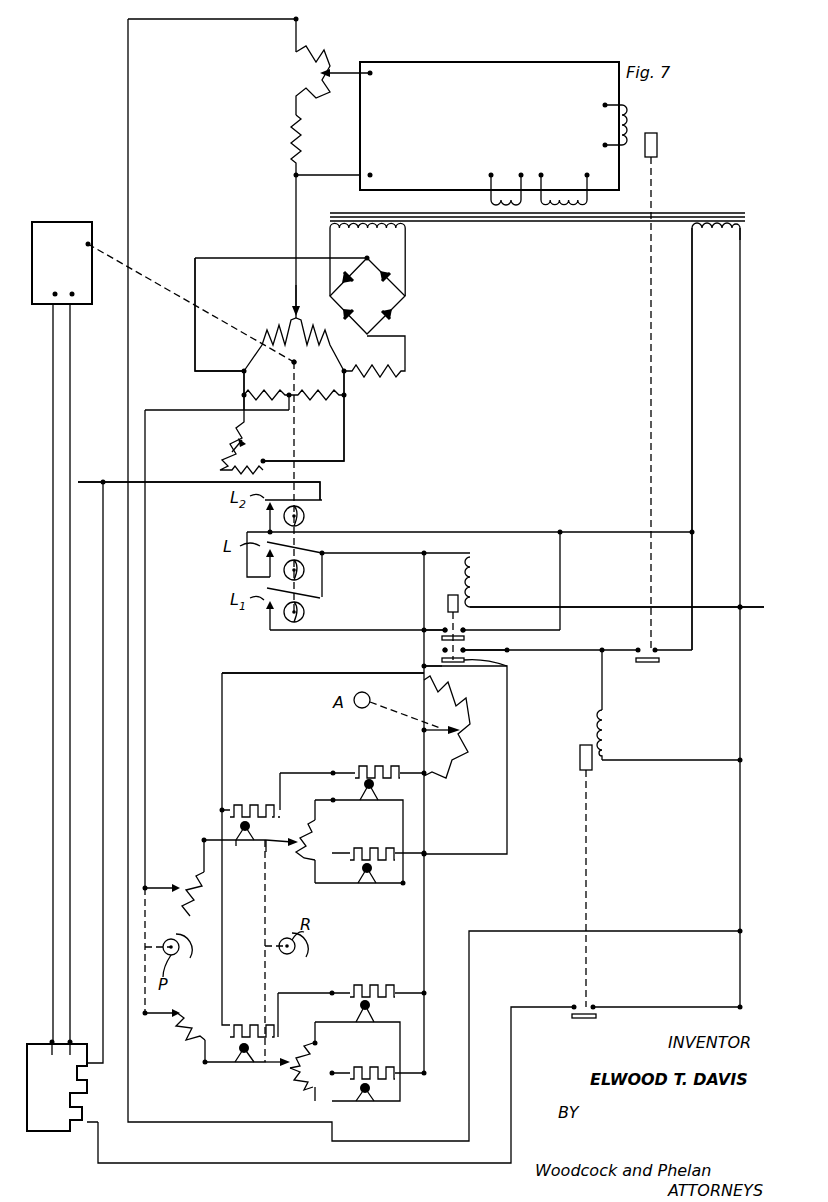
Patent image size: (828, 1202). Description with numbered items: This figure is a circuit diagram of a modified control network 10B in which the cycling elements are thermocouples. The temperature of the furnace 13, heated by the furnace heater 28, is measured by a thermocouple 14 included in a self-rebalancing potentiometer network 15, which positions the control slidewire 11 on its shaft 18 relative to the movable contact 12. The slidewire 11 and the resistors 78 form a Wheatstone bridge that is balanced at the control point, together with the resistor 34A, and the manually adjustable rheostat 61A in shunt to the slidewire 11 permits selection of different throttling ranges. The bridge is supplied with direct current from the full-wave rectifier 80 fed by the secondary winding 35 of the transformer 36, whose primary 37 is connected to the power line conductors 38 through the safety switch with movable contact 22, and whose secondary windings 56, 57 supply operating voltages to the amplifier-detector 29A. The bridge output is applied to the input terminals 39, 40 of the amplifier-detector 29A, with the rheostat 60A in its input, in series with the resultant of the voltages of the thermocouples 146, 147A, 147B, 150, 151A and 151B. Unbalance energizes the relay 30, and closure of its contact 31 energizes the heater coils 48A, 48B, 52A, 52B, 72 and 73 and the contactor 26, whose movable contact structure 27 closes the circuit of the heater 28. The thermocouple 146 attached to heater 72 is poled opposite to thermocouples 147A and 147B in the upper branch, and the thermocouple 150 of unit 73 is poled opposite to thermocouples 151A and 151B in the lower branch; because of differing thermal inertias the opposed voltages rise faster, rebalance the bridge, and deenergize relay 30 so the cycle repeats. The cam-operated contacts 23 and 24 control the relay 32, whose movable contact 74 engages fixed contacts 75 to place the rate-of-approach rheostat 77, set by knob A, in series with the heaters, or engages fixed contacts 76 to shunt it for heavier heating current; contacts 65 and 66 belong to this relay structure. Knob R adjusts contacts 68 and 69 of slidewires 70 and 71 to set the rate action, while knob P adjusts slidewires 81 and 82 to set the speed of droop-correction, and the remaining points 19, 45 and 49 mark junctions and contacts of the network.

The input terminal 40 is at (293, 44).
The rheostat 60A is at (318, 50).
The input terminal 39 is at (294, 177).
The amplifier-detector 29A is at (500, 91).
The relay 30 is at (640, 125).
The secondary winding 56 is at (488, 205).
The secondary winding 57 is at (588, 202).
The transformer 36 is at (562, 245).
The secondary winding 35 is at (402, 236).
The primary winding 37 is at (716, 240).
The self-rebalancing potentiometer network 15 is at (70, 259).
The shaft 18 is at (182, 296).
The movable contact 12 is at (288, 304).
The control slidewire 11 is at (263, 332).
The contact 19 is at (320, 361).
The full-wave rectifier 80 is at (378, 305).
The resistors 78 is at (330, 394).
The resistor 34A is at (372, 378).
The rheostat 61A is at (221, 462).
The power line conductors 38 is at (88, 479).
The movable contact 22 is at (316, 504).
The movable contact 23 is at (310, 540).
The movable contact 24 is at (322, 590).
The relay 32 is at (480, 576).
The contact 66 is at (460, 624).
The contact bar 65 is at (464, 640).
The fixed contacts 75 is at (442, 650).
The movable contact 74 is at (486, 669).
The fixed contacts 76 is at (474, 682).
The relay contact 31 is at (644, 664).
The control network 10B is at (200, 665).
The contactor 26 is at (604, 738).
The rate of approach rheostat 77 is at (458, 770).
The heater coil 48A is at (358, 754).
The heater 72 is at (234, 806).
The thermocouple 147A is at (368, 802).
The heater coil 48B is at (356, 834).
The thermocouple 45 is at (261, 830).
The slidewire 70 is at (297, 840).
The thermocouple 146 is at (246, 860).
The contact 68 is at (270, 846).
The thermocouple 147B is at (368, 891).
The slidewire 81 is at (190, 910).
The slidewire 82 is at (190, 1002).
The heater 73 is at (254, 1024).
The contact 69 is at (284, 1052).
The heater coil 52A is at (356, 976).
The thermocouple 151A is at (366, 1025).
The slidewire 71 is at (304, 1086).
The thermocouple 150 is at (244, 1070).
The wiper 49 is at (269, 1066).
The heater coil 52B is at (356, 1056).
The thermocouple 151B is at (372, 1092).
The movable contact structure 27 is at (584, 1018).
The furnace 13 is at (42, 1038).
The thermocouple 14 is at (60, 1056).
The furnace heater 28 is at (70, 1090).